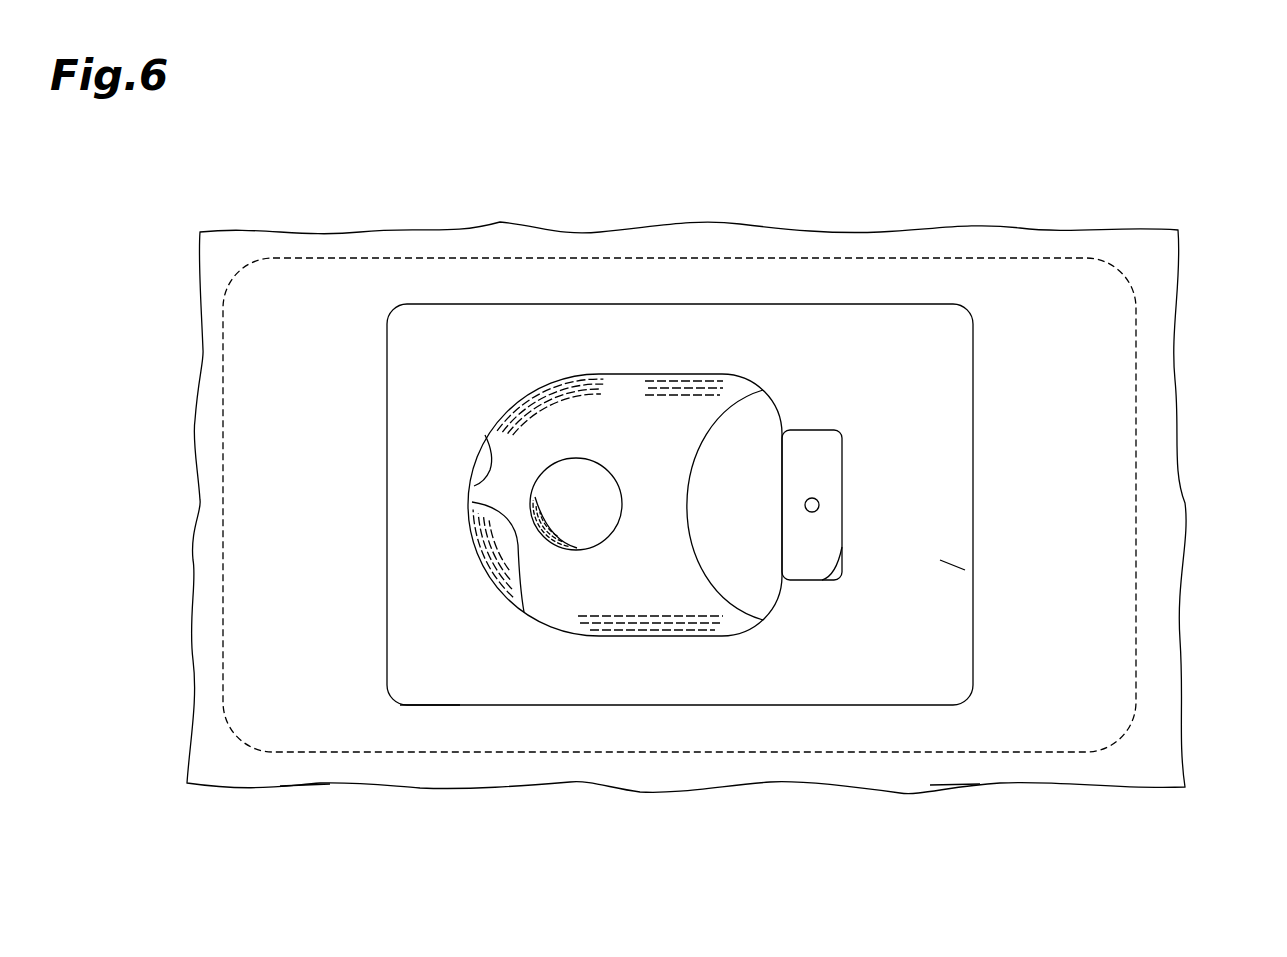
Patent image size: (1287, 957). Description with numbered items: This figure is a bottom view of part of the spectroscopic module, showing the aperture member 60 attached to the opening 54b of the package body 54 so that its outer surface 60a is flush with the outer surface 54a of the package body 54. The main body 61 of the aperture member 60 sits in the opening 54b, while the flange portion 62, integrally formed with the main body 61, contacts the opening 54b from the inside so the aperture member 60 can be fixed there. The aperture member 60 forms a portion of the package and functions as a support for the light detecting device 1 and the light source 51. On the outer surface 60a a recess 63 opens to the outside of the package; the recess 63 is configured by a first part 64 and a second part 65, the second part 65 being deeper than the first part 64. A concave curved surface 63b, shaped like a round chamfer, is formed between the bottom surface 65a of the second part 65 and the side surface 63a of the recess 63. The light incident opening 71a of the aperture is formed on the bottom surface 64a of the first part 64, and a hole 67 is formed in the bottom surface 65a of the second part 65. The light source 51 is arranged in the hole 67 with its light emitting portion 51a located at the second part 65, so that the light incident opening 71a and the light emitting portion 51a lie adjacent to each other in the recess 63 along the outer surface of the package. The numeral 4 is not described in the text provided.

The light detecting device 1 is at (710, 412).
The housing (case) 4 is at (758, 428).
The light source 51 is at (573, 563).
The light emitting portion 51a is at (582, 477).
The package body 54 is at (200, 507).
The outer surface of package body 54a is at (303, 735).
The opening of package body 54b is at (973, 643).
The aperture member 60 is at (692, 690).
The outer surface of aperture member 60a is at (425, 683).
The main body of aperture member 61 is at (950, 563).
The flange portion 62 is at (1136, 458).
The recess 63 is at (637, 517).
The side surface of recess 63a is at (488, 435).
The concave curved surface 63b is at (535, 398).
The first part of recess 64 is at (828, 570).
The bottom surface of first part 64a is at (807, 563).
The second part of recess 65 is at (524, 612).
The bottom surface of second part 65a is at (640, 587).
The hole 67 is at (553, 550).
The light incident opening 71a is at (808, 496).